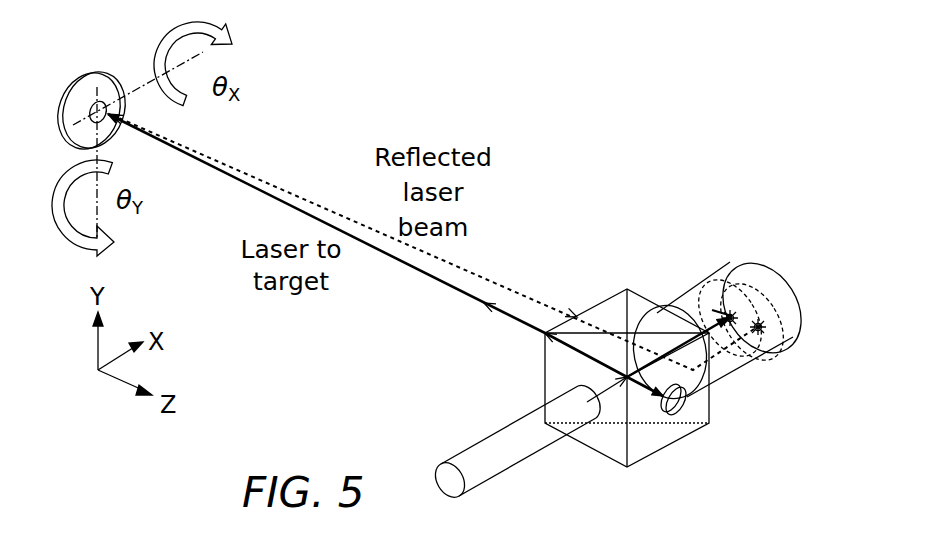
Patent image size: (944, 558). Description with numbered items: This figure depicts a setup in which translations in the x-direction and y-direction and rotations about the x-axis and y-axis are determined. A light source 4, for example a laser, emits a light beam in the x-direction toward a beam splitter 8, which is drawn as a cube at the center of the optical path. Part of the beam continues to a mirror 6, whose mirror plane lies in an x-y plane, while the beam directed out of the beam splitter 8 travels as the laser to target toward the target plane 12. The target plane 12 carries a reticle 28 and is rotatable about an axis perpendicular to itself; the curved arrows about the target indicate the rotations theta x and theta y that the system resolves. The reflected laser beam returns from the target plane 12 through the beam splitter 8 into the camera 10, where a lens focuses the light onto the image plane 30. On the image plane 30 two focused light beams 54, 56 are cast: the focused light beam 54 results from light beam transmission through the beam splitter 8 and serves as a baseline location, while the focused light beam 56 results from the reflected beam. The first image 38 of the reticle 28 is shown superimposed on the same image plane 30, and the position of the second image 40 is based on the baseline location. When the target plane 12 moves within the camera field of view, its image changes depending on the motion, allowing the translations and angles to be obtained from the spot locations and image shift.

The light source 4 is at (485, 470).
The mirror 6 is at (677, 408).
The beam splitter 8 is at (566, 366).
The camera 10 is at (730, 364).
The target plane 12 is at (97, 75).
The reticle 28 is at (108, 100).
The image plane 30 is at (702, 303).
The first image 38 is at (731, 314).
The second image 40 is at (796, 333).
The focused light beam 54 is at (726, 313).
The focused light beam 56 is at (760, 325).